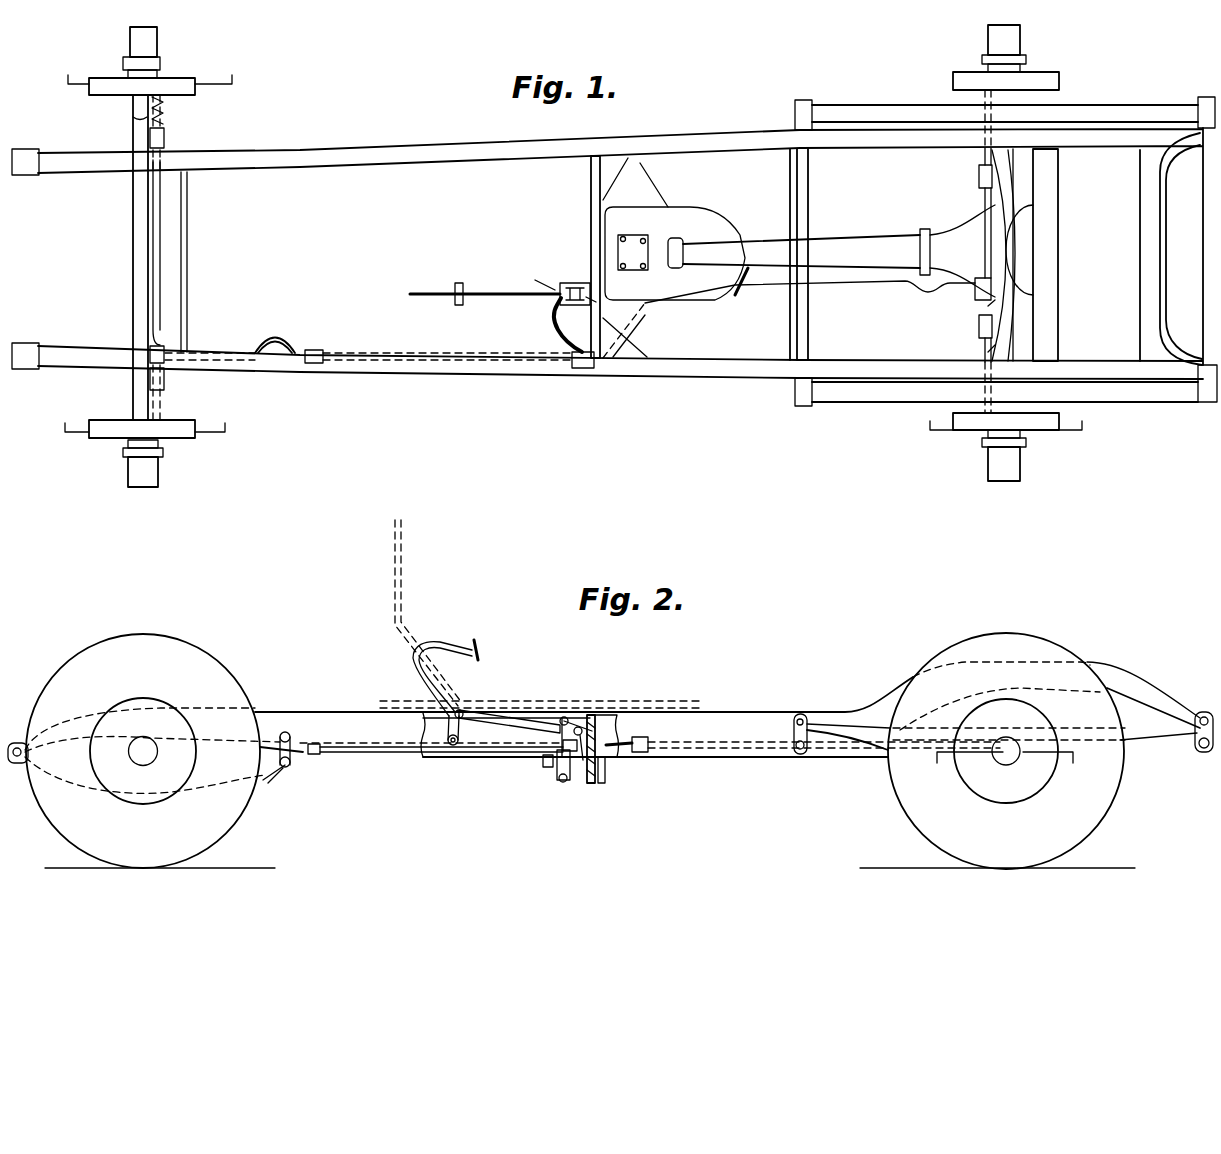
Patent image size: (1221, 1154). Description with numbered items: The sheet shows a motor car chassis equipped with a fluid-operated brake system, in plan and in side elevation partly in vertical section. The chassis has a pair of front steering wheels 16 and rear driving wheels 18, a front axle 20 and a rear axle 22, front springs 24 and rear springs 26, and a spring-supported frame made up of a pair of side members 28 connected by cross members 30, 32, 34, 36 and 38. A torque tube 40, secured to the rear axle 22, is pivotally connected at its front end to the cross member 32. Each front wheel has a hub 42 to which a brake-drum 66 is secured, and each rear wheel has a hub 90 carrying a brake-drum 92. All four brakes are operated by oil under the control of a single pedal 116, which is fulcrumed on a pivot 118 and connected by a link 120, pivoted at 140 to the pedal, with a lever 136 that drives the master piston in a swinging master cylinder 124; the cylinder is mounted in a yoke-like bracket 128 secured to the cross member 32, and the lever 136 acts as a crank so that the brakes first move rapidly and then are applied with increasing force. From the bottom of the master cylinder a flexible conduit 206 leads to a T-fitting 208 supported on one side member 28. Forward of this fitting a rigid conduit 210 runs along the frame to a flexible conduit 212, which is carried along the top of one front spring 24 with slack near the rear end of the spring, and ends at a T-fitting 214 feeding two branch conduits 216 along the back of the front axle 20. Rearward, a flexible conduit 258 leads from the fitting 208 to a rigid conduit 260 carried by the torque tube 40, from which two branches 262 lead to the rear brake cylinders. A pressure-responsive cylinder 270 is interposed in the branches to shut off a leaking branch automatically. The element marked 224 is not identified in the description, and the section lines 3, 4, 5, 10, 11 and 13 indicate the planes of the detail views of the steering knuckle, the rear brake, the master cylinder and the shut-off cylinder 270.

In FIG. 2, the front steering wheels 16 is at (228, 683).
In FIG. 2, the rear driving wheels 18 is at (937, 657).
In FIG. 1, the front axle 20 is at (132, 250).
In FIG. 1, the rear axle 22 is at (1015, 246).
In FIG. 2, the front springs 24 is at (200, 793).
In FIG. 1, the rear springs 26 is at (1090, 110).
In FIG. 2, the rear springs 26 is at (1140, 737).
In FIG. 1, the side members 28 is at (578, 142).
In FIG. 2, the side members 28 is at (745, 712).
In FIG. 1, the cross member 30 is at (188, 250).
In FIG. 1, the cross member 32 is at (590, 248).
In FIG. 2, the cross member 32 is at (602, 785).
In FIG. 1, the cross member 34 is at (790, 206).
In FIG. 1, the cross member 36 is at (1058, 218).
In FIG. 1, the cross member 38 is at (1145, 243).
In FIG. 1, the torque tube 40 is at (845, 243).
In FIG. 1, the hub 42 is at (160, 62).
In FIG. 2, the hub 42 is at (140, 765).
In FIG. 1, the brake-drum 66 is at (180, 80).
In FIG. 2, the brake-drum 66 is at (157, 712).
In FIG. 1, the hub 90 is at (1022, 40).
In FIG. 2, the hub 90 is at (1000, 765).
In FIG. 1, the brake-drum 92 is at (1058, 85).
In FIG. 2, the brake-drum 92 is at (1050, 718).
In FIG. 1, the pedal 116 is at (462, 290).
In FIG. 2, the pedal 116 is at (480, 652).
In FIG. 2, the pivot 118 is at (448, 748).
In FIG. 2, the link 120 is at (515, 720).
In FIG. 2, the master cylinder 124 is at (550, 770).
In FIG. 2, the yoke-like bracket 128 is at (585, 775).
In FIG. 2, the lever 136 is at (578, 726).
In FIG. 2, the pivot 140 is at (462, 708).
In FIG. 1, the conduit 206 is at (552, 325).
In FIG. 2, the conduit 206 is at (548, 760).
In FIG. 1, the T-fitting 208 is at (578, 370).
In FIG. 2, the T-fitting 208 is at (563, 784).
In FIG. 1, the conduit 210 is at (425, 376).
In FIG. 2, the conduit 210 is at (488, 752).
In FIG. 1, the flexible conduit 212 is at (282, 345).
In FIG. 2, the flexible conduit 212 is at (297, 758).
In FIG. 1, the T-fitting 214 is at (148, 358).
In FIG. 1, the branch conduits 216 is at (152, 212).
In FIG. 1, the spring 224 is at (165, 100).
In FIG. 1, the flexible conduit 258 is at (730, 300).
In FIG. 2, the flexible conduit 258 is at (622, 752).
In FIG. 1, the rigid conduit 260 is at (835, 283).
In FIG. 2, the rigid conduit 260 is at (750, 758).
In FIG. 1, the branches 262 is at (983, 165).
In FIG. 1, the cylinder 270 is at (165, 138).
In FIG. 1, the section line 3- 3 is at (143, 416).
In FIG. 1, the section line 4- 4 is at (1004, 414).
In FIG. 1, the section line 5- 5 is at (146, 68).
In FIG. 2, the section line 10- 10 is at (1001, 768).
In FIG. 1, the section line 11- 11 is at (561, 294).
In FIG. 1, the section line 13- 13 is at (1005, 316).